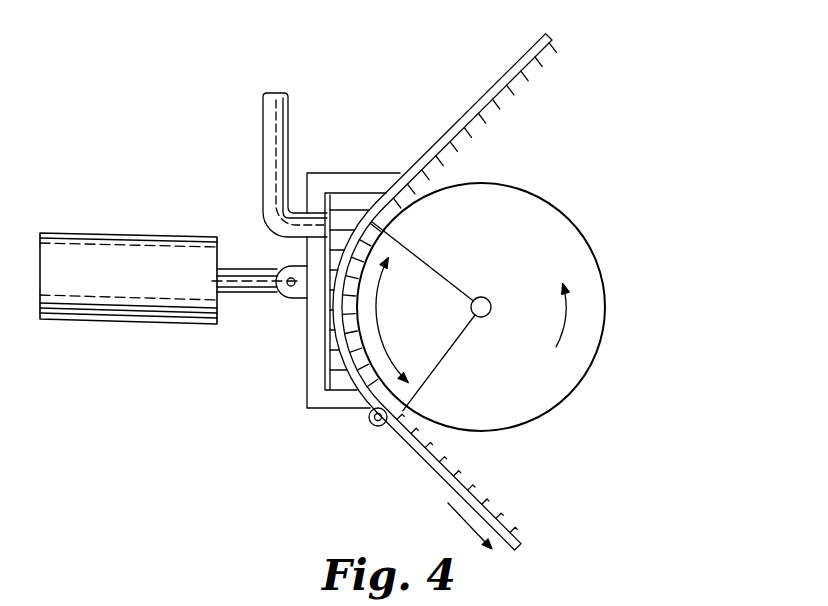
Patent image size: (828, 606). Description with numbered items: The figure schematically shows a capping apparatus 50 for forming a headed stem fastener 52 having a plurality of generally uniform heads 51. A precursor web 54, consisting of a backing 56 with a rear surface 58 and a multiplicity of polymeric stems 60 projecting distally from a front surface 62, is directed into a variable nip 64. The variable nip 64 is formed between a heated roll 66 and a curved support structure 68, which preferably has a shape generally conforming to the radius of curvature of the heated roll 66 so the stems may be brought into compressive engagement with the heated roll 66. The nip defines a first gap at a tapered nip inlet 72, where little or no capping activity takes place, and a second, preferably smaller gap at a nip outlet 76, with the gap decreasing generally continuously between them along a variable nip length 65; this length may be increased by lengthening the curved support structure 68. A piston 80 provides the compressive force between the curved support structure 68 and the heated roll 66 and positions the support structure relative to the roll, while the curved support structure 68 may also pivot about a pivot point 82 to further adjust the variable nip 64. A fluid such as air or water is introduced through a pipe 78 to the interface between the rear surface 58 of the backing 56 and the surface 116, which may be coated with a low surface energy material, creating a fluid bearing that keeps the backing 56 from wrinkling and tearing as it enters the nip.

The capping apparatus 50 is at (643, 120).
The heads 51 is at (480, 497).
The headed stem fastener 52 is at (450, 485).
The precursor web 54 is at (512, 44).
The backing 56 is at (489, 90).
The rear surface 58 is at (457, 122).
The polymeric stems 60 is at (540, 68).
The front surface 62 is at (517, 124).
The variable nip 64 is at (511, 162).
The nip inlet 72 is at (461, 170).
The variable nip length 65 is at (388, 327).
The heated roll 66 is at (501, 247).
The curved support structure 68 is at (325, 349).
The nip outlet 76 is at (502, 457).
The pipe 78 is at (268, 113).
The piston 80 is at (118, 233).
The pivot point 82 is at (370, 419).
The surface 116 is at (364, 208).